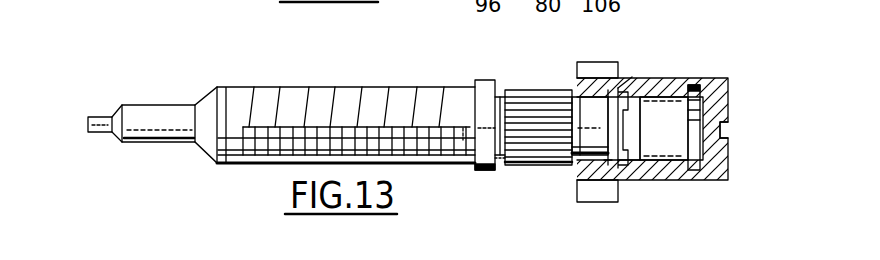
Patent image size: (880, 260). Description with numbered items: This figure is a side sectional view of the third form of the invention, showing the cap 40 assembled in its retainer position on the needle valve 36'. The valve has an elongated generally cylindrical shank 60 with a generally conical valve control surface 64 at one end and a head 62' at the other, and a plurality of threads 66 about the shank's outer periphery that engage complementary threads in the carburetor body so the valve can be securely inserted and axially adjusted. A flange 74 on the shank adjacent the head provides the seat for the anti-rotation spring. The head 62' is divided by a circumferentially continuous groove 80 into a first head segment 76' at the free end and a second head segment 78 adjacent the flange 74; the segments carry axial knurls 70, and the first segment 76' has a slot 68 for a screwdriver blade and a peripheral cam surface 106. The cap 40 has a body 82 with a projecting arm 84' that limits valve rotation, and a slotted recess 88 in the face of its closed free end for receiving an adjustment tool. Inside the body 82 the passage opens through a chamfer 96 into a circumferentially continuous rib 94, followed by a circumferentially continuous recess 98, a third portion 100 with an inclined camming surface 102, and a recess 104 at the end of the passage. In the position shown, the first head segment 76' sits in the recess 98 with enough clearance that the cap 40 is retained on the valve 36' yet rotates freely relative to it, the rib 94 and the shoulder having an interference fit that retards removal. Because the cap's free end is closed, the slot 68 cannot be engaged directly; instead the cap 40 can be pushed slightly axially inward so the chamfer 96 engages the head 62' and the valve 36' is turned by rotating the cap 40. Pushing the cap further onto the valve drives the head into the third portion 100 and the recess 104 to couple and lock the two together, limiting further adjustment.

The needle valve 36' is at (173, 81).
The cap 40 is at (764, 93).
The shank 60 is at (288, 93).
The head 62' is at (492, 171).
The conical valve control surface 64 is at (107, 103).
The threads 66 is at (240, 164).
The slot 68 is at (615, 130).
The knurls 70 is at (501, 170).
The flange 74 is at (483, 80).
The first head segment 76' is at (678, 186).
The second head segment 78 is at (517, 92).
The groove 80 is at (587, 108).
The body 82 is at (728, 80).
The arm 84' is at (615, 113).
The slotted recess 88 is at (728, 128).
The rib 94 is at (582, 167).
The chamfer 96 is at (573, 160).
The recess 98 is at (607, 170).
The third portion 100 is at (676, 157).
The inclined camming surface 102 is at (635, 92).
The recess 104 is at (692, 85).
The peripheral cam surface 106 is at (628, 162).